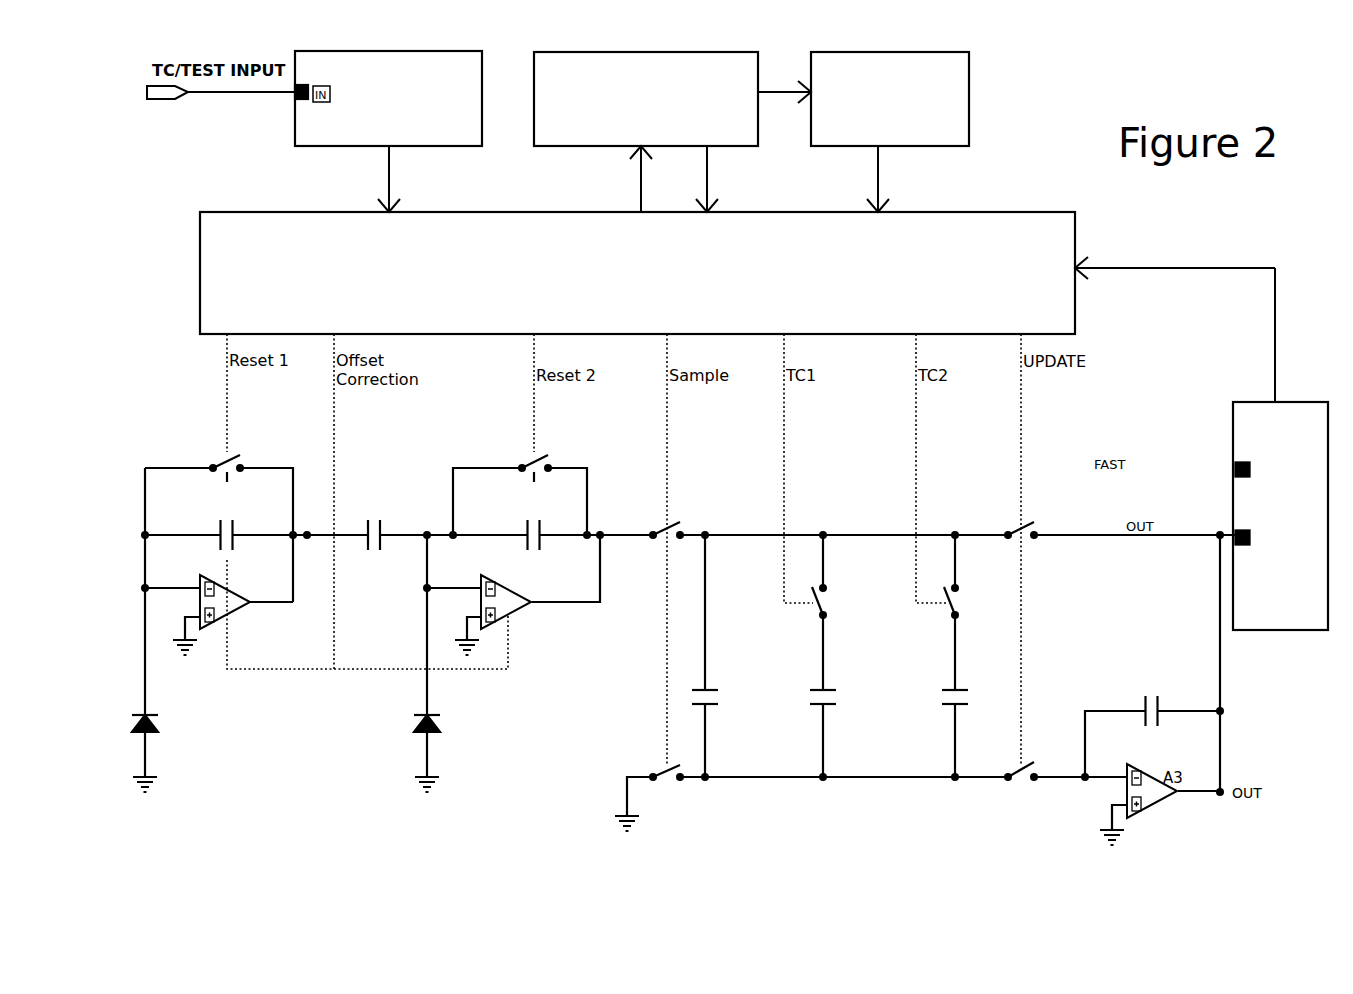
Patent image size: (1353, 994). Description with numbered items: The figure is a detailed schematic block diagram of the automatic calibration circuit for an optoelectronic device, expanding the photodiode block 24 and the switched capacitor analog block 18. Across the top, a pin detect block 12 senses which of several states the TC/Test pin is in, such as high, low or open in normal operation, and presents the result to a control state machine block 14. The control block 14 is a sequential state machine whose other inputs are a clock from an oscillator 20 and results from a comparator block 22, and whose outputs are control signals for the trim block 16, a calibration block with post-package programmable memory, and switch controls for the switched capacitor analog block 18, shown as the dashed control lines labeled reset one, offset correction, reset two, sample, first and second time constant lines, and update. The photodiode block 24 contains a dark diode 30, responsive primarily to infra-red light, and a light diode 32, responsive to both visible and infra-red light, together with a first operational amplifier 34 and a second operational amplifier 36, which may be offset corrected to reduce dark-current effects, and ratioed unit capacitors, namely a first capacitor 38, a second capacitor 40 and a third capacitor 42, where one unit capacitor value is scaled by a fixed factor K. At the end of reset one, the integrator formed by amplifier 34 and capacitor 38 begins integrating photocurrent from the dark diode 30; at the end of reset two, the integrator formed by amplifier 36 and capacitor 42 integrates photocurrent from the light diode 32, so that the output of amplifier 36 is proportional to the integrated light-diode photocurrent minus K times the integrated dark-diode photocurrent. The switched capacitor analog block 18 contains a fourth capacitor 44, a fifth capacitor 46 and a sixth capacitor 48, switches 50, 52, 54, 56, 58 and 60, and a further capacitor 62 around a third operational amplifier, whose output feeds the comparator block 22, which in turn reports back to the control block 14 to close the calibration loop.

The pin detect block 12 is at (482, 99).
The control state machine block 14 is at (737, 307).
The trim block 16 is at (707, 103).
The switched capacitor analog block 18 is at (892, 452).
The oscillator 20 is at (969, 100).
The comparator block 22 is at (1298, 456).
The photodiode block 24 is at (364, 684).
The dark diode 30 is at (160, 727).
The light diode 32 is at (440, 722).
The amplifier A1 34 is at (213, 620).
The amplifier A2 36 is at (488, 620).
The capacitor C1 38 is at (236, 523).
The capacitor C2 40 is at (345, 553).
The capacitor C3 42 is at (516, 535).
The capacitor C4 44 is at (718, 688).
The capacitor C5 46 is at (838, 688).
The capacitor C6 48 is at (967, 688).
The switch 50 is at (656, 534).
The switch 52 is at (666, 763).
The switch 54 is at (825, 603).
The switch 56 is at (957, 603).
The switch 58 is at (1006, 533).
The switch 60 is at (1031, 758).
The capacitor 62 is at (1145, 699).